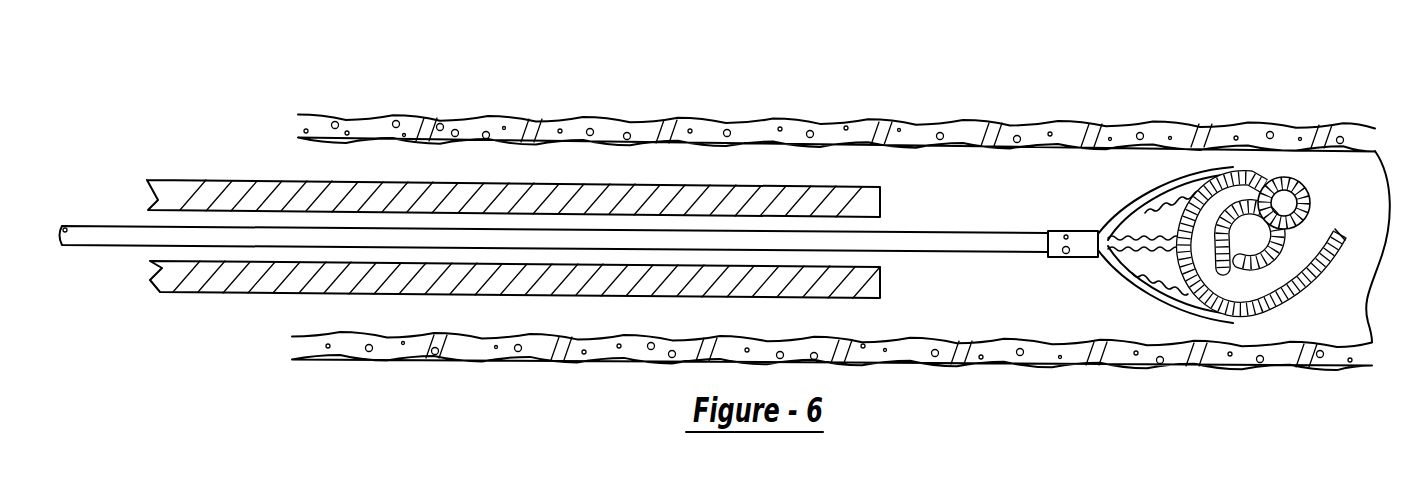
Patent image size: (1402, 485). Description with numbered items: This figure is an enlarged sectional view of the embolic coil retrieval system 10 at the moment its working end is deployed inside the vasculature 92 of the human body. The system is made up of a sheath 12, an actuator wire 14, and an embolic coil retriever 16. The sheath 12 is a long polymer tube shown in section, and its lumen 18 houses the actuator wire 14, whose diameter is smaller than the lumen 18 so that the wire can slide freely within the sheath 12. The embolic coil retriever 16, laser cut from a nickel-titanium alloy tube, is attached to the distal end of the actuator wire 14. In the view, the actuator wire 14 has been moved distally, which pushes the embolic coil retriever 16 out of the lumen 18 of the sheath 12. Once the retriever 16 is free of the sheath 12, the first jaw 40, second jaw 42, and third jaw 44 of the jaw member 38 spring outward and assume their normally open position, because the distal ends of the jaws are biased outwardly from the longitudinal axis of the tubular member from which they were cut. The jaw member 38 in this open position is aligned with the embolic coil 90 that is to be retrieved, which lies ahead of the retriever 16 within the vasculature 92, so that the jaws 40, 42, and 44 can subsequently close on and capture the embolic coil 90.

The embolic coil retrieval system 10 is at (197, 139).
The sheath 12 is at (481, 182).
The actuator wire 14 is at (103, 246).
The embolic coil retriever 16 is at (1080, 230).
The lumen 18 is at (220, 263).
The jaw member 38 is at (1153, 195).
The first jaw 40 is at (1178, 178).
The second jaw 42 is at (1142, 273).
The third jaw 44 is at (1182, 306).
The embolic coil 90 is at (1288, 195).
The vasculature 92 is at (875, 123).